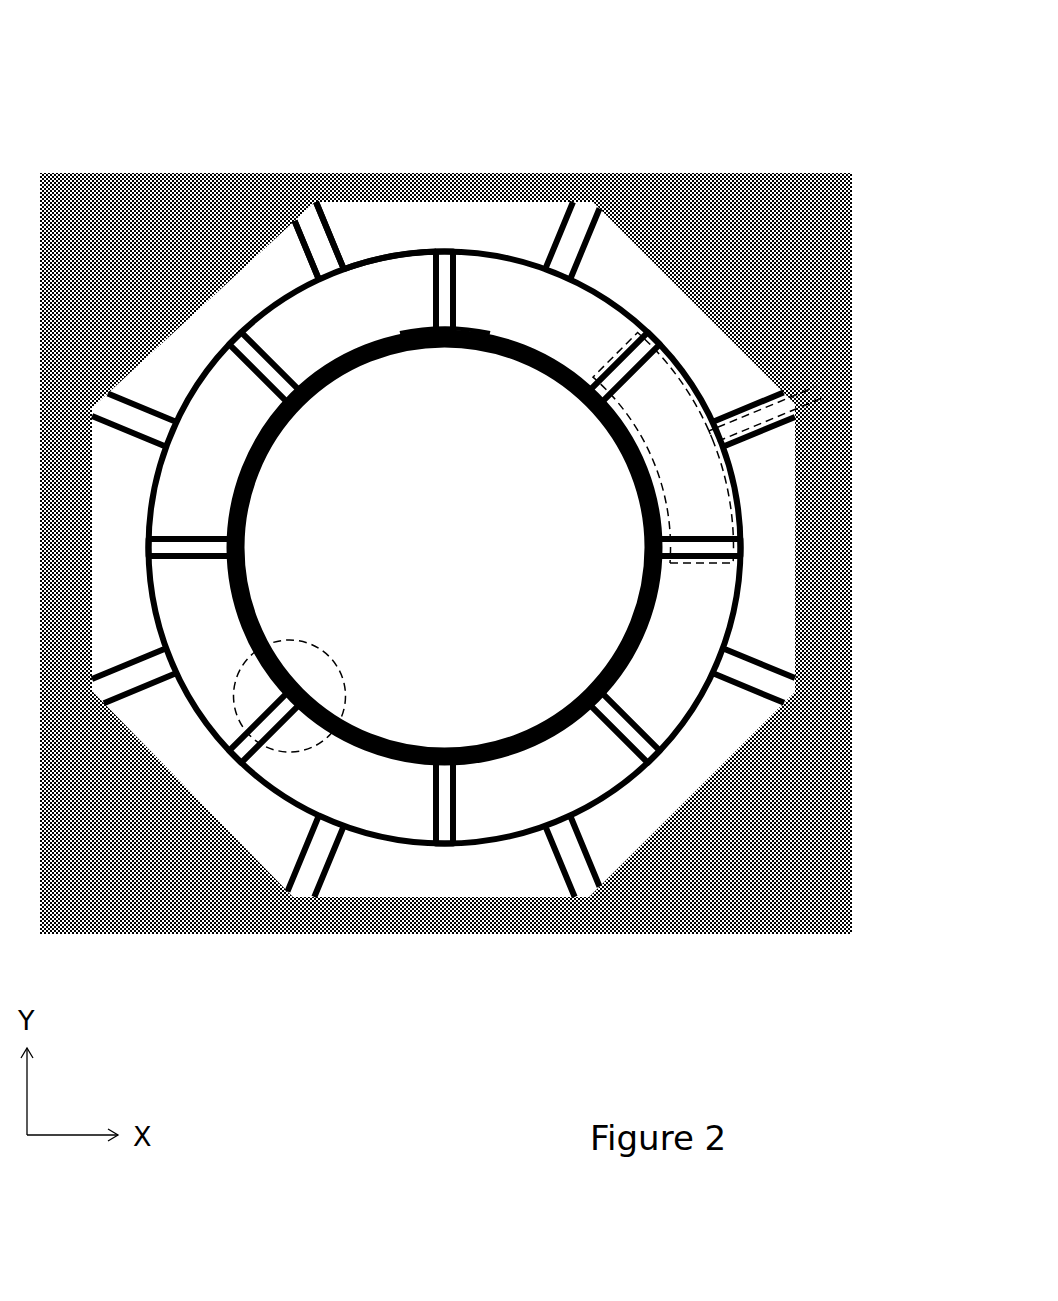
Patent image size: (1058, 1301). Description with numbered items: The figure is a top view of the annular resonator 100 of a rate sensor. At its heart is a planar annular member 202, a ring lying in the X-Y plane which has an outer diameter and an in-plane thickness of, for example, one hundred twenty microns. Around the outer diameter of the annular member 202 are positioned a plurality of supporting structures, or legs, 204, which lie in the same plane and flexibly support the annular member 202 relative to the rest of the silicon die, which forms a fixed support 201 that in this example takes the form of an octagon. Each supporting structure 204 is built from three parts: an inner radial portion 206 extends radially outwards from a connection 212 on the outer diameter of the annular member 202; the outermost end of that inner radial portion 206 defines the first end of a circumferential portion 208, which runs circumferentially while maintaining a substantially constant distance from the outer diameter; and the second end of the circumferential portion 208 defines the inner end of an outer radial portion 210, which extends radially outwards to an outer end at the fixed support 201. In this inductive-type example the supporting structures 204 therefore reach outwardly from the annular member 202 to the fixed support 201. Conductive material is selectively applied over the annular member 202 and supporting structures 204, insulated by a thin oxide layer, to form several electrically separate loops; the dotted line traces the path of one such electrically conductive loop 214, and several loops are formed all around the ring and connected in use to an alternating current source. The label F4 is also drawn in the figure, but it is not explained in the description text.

The annular resonator 100 is at (750, 128).
The fixed support 201 is at (666, 896).
The planar annular member 202 is at (640, 636).
The supporting structures 204 is at (172, 730).
The inner radial portion 206 is at (437, 268).
The circumferential portion 208 is at (383, 255).
The outer radial portion 210 is at (313, 203).
The connection 212 is at (460, 320).
The electrically conductive loop 214 is at (808, 392).
The force F4 is at (307, 755).